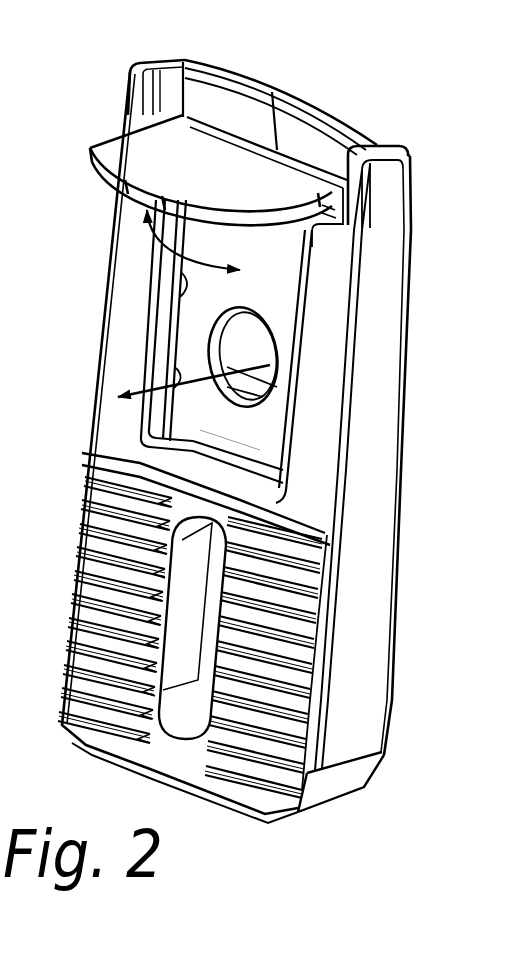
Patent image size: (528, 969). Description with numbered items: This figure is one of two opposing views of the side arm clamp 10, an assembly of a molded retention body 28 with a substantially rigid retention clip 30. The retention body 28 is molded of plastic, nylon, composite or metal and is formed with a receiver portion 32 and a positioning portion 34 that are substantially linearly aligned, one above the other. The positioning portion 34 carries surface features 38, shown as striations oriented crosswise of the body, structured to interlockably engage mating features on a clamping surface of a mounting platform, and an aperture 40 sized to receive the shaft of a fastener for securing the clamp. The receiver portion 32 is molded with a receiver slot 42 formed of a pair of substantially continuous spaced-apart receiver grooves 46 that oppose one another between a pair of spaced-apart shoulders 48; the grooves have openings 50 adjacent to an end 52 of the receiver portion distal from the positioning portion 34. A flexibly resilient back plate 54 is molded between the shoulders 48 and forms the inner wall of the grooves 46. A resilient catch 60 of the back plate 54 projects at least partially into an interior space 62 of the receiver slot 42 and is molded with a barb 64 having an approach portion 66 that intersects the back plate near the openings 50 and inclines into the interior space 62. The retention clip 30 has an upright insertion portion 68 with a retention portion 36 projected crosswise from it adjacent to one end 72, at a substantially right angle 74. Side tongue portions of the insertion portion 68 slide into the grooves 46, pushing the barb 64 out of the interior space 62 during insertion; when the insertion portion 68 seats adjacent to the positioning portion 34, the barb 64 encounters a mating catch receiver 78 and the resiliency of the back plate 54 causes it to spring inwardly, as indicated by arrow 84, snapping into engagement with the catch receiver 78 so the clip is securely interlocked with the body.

The side arm clamp 10 is at (447, 92).
The retention body 28 is at (401, 537).
The retention clip 30 is at (97, 137).
The receiver portion 32 is at (118, 282).
The positioning portion 34 is at (381, 697).
The retention portion 36 is at (207, 174).
The surface features 38 is at (73, 563).
The aperture 40 is at (187, 733).
The receiver slot 42 is at (250, 124).
The receiver grooves 46 is at (345, 252).
The shoulders 48 is at (140, 97).
The openings 50 is at (376, 146).
The end 52 is at (332, 196).
The back plate 54 is at (90, 149).
The resilient catch 60 is at (305, 365).
The interior space 62 is at (186, 457).
The barb 64 is at (230, 400).
The approach portion 66 is at (262, 354).
The insertion portion 68 is at (273, 444).
The end 72 is at (305, 108).
The right angle 74 is at (193, 240).
The mating catch receiver 78 is at (268, 322).
The arrow 84 is at (149, 386).